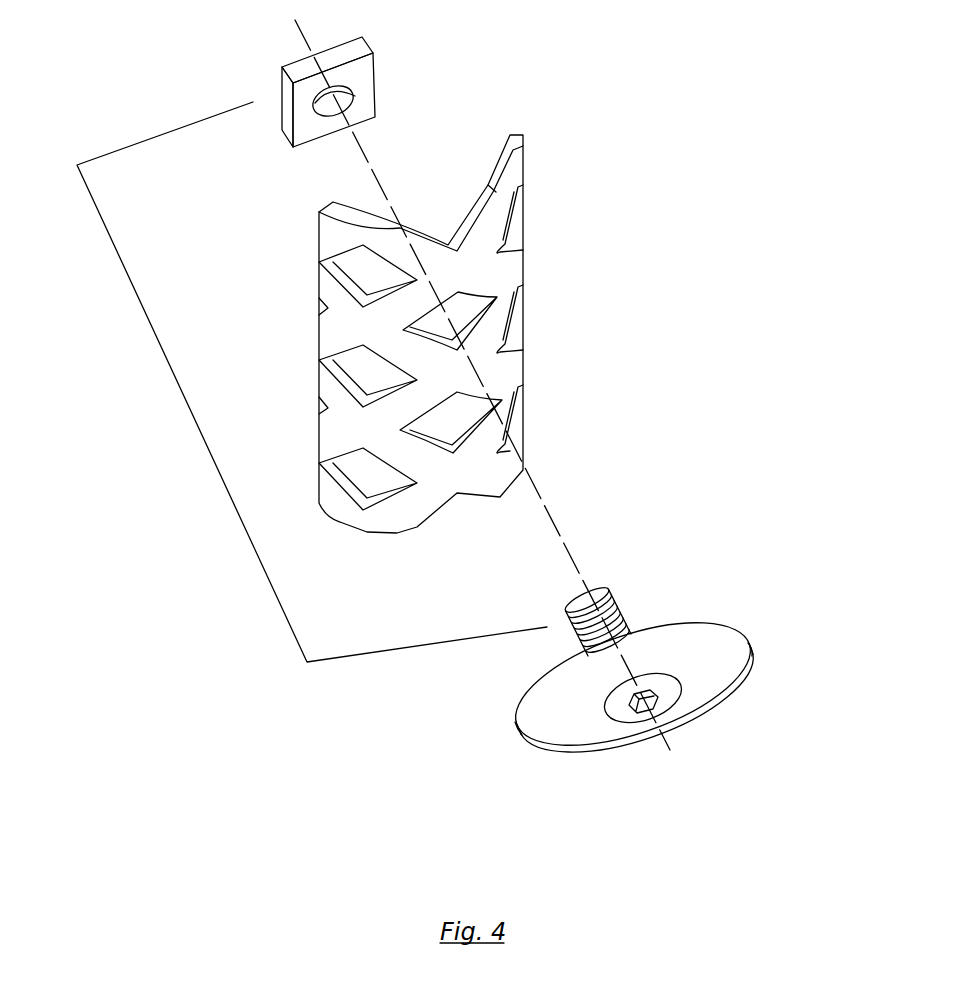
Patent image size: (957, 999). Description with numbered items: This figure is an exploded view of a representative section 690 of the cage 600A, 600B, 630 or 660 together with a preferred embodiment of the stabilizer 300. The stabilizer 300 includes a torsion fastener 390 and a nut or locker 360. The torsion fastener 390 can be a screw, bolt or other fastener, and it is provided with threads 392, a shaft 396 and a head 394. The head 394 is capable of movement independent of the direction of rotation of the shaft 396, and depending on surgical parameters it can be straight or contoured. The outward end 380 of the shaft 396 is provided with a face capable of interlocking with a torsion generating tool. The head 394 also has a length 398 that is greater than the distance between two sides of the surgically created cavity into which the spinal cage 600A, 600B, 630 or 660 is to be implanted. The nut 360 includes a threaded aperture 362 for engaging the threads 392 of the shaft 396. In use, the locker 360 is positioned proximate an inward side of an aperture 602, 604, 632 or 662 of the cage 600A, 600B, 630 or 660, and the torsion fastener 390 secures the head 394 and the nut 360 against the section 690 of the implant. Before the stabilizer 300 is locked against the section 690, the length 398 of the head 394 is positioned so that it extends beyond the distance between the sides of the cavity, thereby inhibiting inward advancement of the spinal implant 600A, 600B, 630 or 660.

The stabilizer 300 is at (190, 431).
The nut 360 is at (325, 88).
The threaded aperture 362 is at (357, 97).
The outward end 380 is at (623, 712).
The torsion fastener 390 is at (633, 676).
The threads 392 is at (633, 652).
The head 394 is at (704, 661).
The shaft 396 is at (615, 595).
The length 398 is at (741, 657).
The section 690 is at (537, 379).
The cage 600A is at (583, 334).
The cage 600B is at (583, 334).
The cage 630 is at (583, 334).
The cage 660 is at (583, 334).
The aperture 602 is at (573, 347).
The aperture 604 is at (573, 347).
The aperture 632 is at (573, 347).
The aperture 662 is at (469, 303).